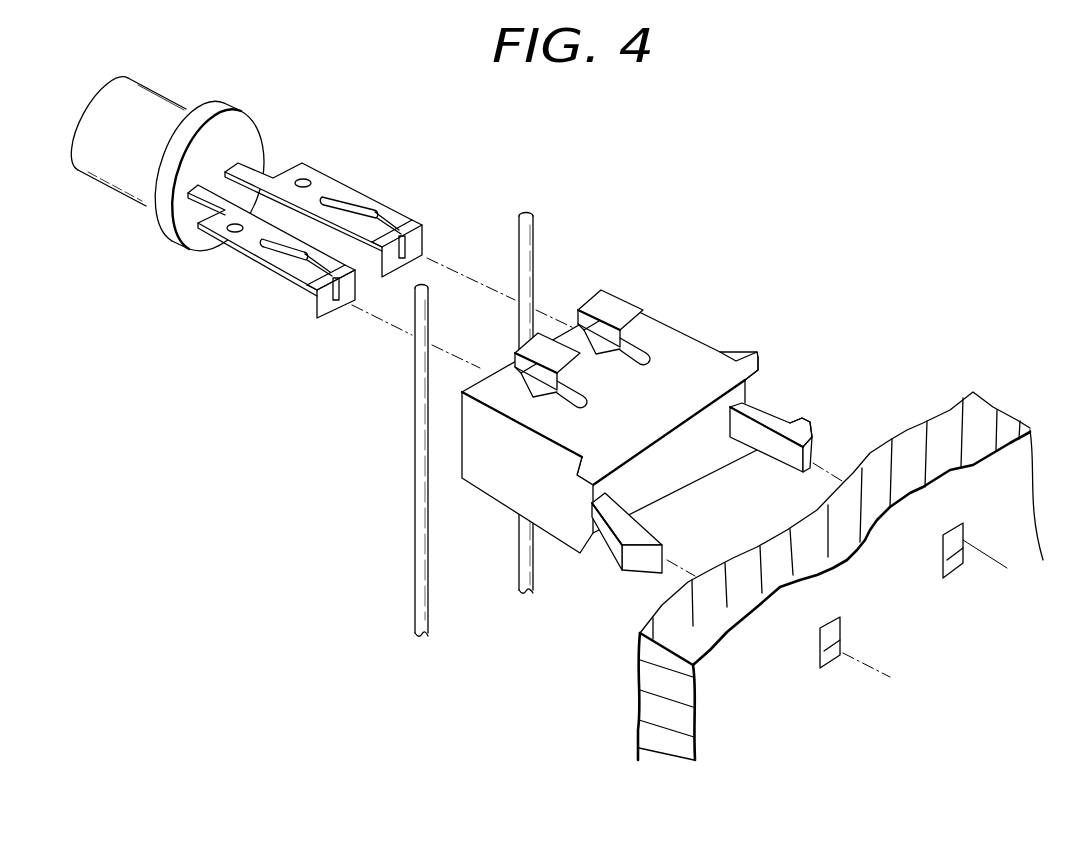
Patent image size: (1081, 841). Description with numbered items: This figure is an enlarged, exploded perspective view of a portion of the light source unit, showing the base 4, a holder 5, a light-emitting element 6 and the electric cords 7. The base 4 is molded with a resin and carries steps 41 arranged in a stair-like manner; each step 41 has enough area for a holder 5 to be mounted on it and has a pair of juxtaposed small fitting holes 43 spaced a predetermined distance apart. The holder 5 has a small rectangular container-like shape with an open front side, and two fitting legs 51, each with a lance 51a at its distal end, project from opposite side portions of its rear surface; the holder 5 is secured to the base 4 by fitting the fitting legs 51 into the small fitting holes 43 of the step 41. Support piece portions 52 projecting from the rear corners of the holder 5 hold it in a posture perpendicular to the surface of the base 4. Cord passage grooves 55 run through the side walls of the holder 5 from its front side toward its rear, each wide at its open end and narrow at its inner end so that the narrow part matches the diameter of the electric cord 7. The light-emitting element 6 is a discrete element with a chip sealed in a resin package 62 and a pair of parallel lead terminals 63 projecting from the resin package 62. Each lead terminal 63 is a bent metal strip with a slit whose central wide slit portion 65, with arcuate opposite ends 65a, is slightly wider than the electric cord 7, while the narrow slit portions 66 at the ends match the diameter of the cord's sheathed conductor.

The base 4 is at (847, 543).
The steps 41 is at (948, 413).
The small fitting holes 43 is at (950, 578).
The holder 5 is at (673, 406).
The fitting legs 51 is at (738, 459).
The lance 51a is at (812, 418).
The support piece portions 52 is at (751, 352).
The cord passage grooves 55 is at (604, 327).
The light-emitting element 6 is at (266, 118).
The resin package 62 is at (121, 190).
The lead terminals 63 is at (304, 213).
The wide slit portion 65 is at (392, 230).
The opposite ends of the wide slit portion 65a is at (307, 274).
The narrow slit portions 66 is at (346, 196).
The electric cords 7 is at (533, 255).